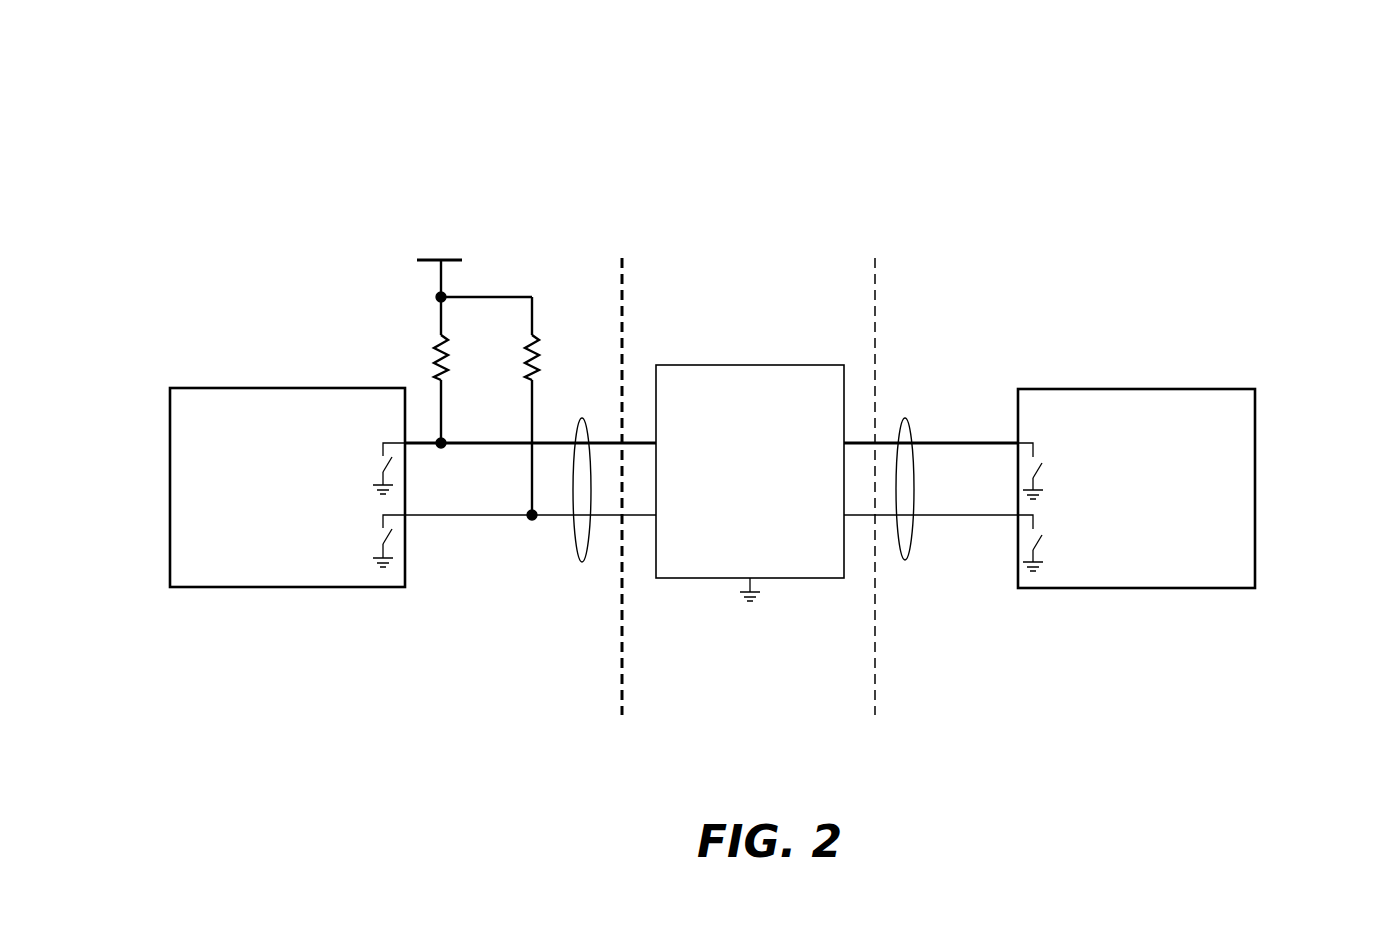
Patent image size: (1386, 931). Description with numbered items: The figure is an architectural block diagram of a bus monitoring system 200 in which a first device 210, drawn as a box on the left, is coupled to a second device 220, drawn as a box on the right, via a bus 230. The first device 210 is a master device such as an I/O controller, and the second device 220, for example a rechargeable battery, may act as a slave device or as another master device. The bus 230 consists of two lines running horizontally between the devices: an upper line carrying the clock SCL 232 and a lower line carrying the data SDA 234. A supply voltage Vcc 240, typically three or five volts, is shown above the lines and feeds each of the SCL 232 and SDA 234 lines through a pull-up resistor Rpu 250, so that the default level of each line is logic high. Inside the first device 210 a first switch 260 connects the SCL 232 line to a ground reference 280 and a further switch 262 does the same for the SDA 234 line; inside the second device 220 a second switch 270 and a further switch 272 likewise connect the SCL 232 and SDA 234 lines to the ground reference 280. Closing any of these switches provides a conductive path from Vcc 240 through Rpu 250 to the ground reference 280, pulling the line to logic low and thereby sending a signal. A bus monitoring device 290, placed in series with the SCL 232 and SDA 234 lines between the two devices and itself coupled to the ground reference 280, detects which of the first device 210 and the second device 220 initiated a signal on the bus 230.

The bus monitoring system 200 is at (1200, 178).
The first device 210 is at (199, 577).
The second device 220 is at (1182, 571).
The bus 230 is at (583, 562).
The SCL 232 is at (965, 441).
The SDA 234 is at (957, 516).
The voltage Vcc 240 is at (465, 281).
The pull-up resistor Rpu 250 is at (484, 408).
The first switch 260 is at (371, 464).
The switch 262 is at (371, 536).
The second switch 270 is at (1053, 466).
The switch 272 is at (1053, 538).
The ground reference 280 is at (385, 474).
The bus monitoring device 290 is at (734, 518).